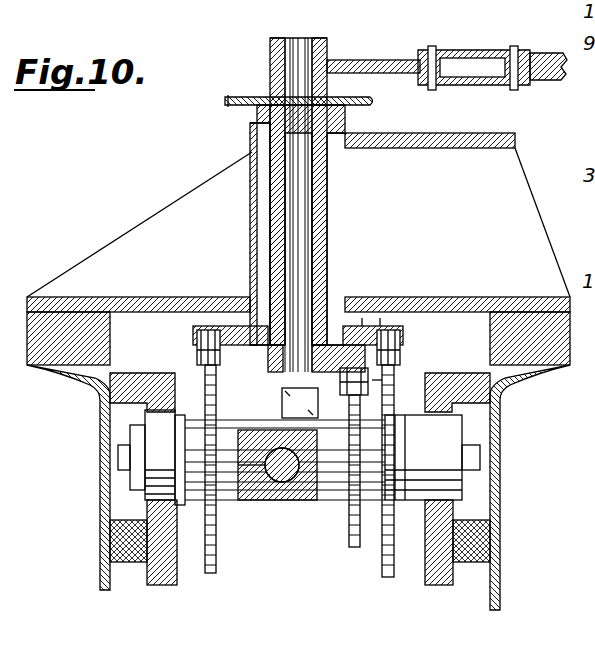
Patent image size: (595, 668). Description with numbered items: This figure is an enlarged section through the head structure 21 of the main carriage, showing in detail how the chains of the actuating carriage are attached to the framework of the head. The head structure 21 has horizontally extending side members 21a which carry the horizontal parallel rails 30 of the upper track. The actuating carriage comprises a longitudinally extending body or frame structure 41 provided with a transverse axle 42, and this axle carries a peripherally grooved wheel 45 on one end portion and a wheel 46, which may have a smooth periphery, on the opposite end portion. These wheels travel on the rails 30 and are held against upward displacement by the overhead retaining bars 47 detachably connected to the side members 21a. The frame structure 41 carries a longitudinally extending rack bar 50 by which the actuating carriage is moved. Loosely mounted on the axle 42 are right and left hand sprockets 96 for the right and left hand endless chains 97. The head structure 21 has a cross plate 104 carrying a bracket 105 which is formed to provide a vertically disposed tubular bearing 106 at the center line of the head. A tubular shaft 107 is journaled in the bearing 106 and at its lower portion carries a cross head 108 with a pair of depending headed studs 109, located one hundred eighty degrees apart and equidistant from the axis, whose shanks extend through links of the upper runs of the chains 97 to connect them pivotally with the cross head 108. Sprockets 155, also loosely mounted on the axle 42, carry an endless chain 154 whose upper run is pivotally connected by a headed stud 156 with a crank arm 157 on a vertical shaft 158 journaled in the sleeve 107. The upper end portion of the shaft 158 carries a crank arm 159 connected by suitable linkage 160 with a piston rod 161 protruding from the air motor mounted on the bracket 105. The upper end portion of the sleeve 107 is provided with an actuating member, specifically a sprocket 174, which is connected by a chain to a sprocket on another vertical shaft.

The head structure 21 is at (513, 491).
The side members 21a is at (100, 505).
The rails 30 is at (165, 586).
The body or frame structure 41 is at (290, 502).
The transverse axle 42 is at (472, 457).
The peripherally grooved wheel 45 is at (160, 438).
The wheel 46 is at (445, 428).
The retaining bars 47 is at (160, 375).
The rack bar 50 is at (282, 398).
The sprockets 96 is at (217, 536).
The endless chains 97 is at (198, 352).
The cross plate 104 is at (140, 300).
The bracket 105 is at (405, 135).
The tubular bearing 106 is at (252, 188).
The tubular shaft 107 is at (322, 228).
The cross head 108 is at (362, 320).
The headed studs 109 is at (222, 352).
The endless chain 154 is at (390, 385).
The sprockets 155 is at (345, 548).
The headed stud 156 is at (340, 378).
The crank arm 157 is at (380, 322).
The vertical shaft 158 is at (300, 250).
The crank arm 159 is at (325, 64).
The linkage 160 is at (450, 52).
The piston rod 161 is at (556, 80).
The sprocket 174 is at (345, 96).